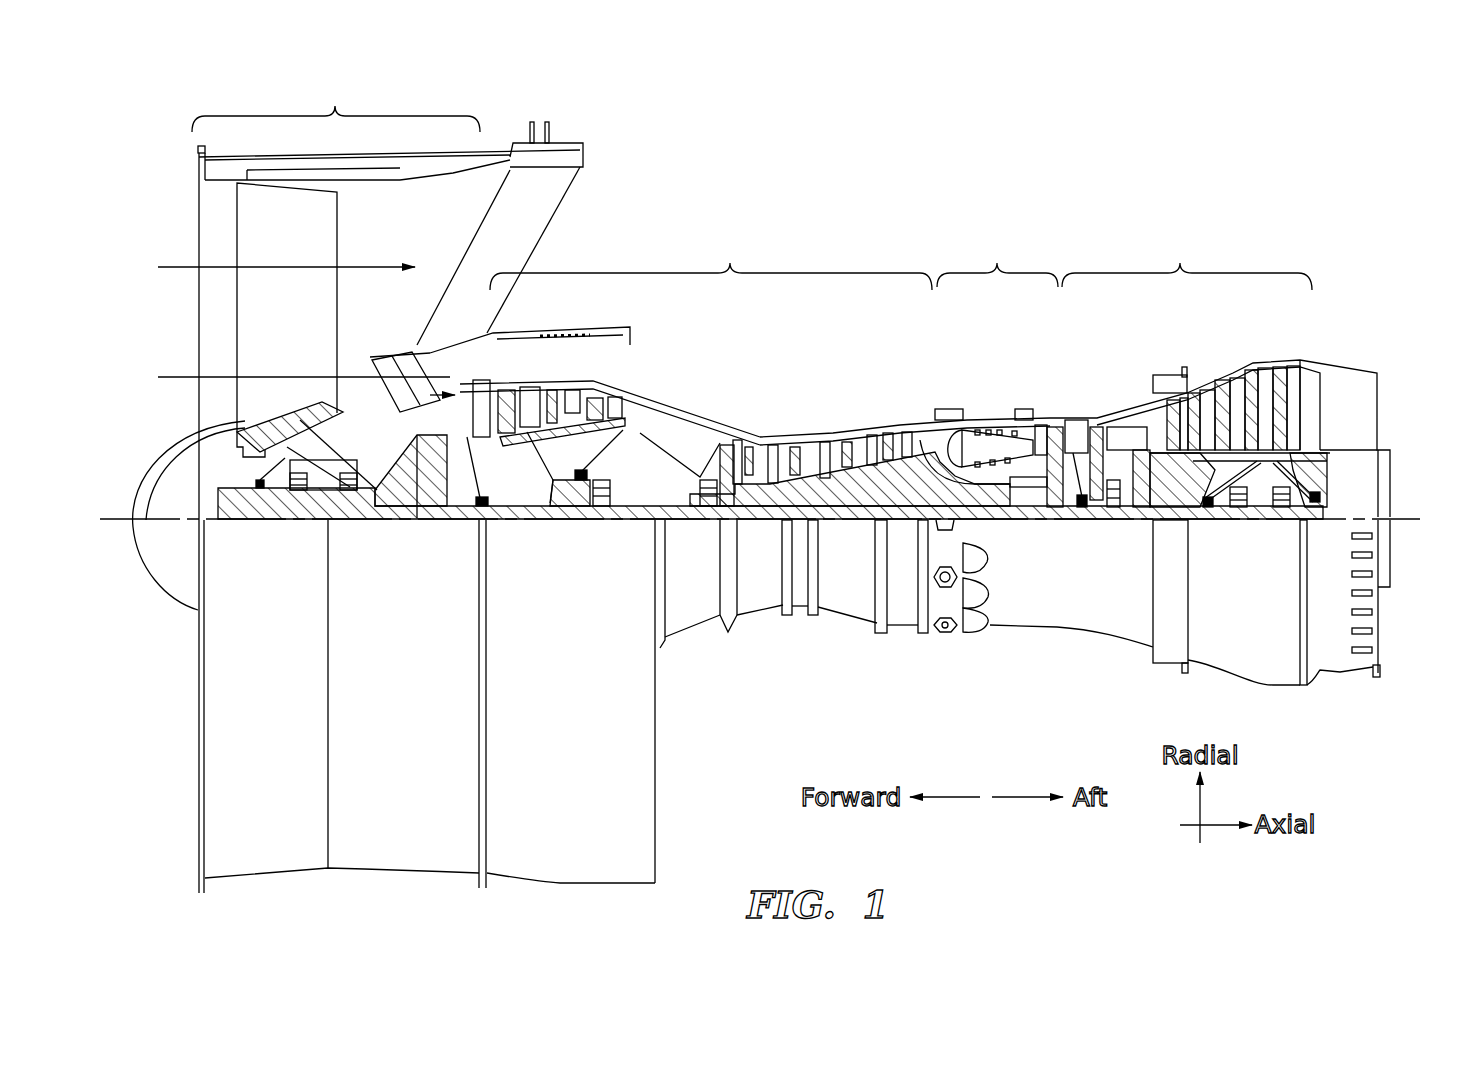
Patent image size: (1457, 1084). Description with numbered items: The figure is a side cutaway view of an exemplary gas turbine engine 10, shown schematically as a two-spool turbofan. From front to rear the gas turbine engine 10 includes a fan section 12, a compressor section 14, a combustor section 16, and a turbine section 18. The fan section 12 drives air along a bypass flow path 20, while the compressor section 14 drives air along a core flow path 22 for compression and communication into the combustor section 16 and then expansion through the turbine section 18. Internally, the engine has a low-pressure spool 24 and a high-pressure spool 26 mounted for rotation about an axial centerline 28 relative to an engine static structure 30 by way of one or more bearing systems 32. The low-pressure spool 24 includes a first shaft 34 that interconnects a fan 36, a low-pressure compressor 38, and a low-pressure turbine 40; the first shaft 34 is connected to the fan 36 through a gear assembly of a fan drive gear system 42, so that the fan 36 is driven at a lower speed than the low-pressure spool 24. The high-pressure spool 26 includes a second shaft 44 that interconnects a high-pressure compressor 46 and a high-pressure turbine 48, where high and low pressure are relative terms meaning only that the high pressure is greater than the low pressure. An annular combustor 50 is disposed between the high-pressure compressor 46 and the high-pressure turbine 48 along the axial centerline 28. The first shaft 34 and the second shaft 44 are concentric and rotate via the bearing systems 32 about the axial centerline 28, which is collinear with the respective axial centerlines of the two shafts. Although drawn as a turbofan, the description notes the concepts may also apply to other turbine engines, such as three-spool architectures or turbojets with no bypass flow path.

The gas turbine engine 10 is at (741, 507).
The fan section 12 is at (306, 344).
The compressor section 14 is at (770, 339).
The combustor section 16 is at (989, 360).
The turbine section 18 is at (1196, 370).
The bypass flow path 20 is at (170, 266).
The core flow path 22 is at (170, 376).
The low-pressure spool 24 is at (852, 522).
The high-pressure spool 26 is at (809, 502).
The axial centerline 28 is at (1418, 517).
The engine static structure 30 is at (905, 636).
The bearing systems 32 is at (1135, 521).
The first shaft 34 is at (677, 522).
The fan 36 is at (281, 333).
The low-pressure compressor 38 is at (595, 386).
The low-pressure turbine 40 is at (1233, 363).
The fan drive gear system 42 is at (433, 528).
The second shaft 44 is at (1052, 521).
The high-pressure compressor 46 is at (810, 437).
The high-pressure turbine 48 is at (1077, 417).
The annular combustor 50 is at (993, 447).